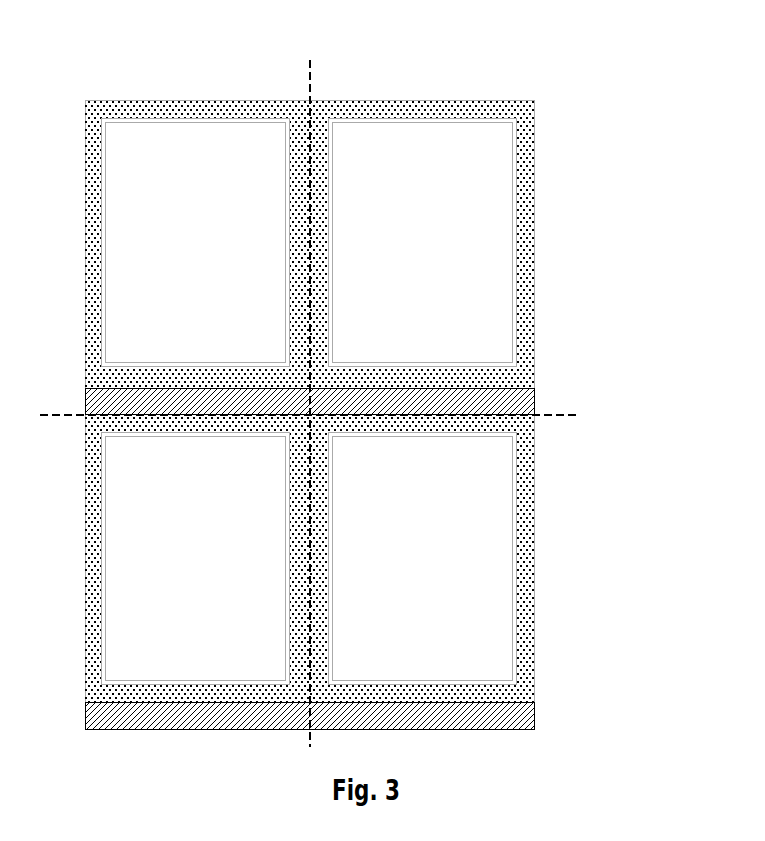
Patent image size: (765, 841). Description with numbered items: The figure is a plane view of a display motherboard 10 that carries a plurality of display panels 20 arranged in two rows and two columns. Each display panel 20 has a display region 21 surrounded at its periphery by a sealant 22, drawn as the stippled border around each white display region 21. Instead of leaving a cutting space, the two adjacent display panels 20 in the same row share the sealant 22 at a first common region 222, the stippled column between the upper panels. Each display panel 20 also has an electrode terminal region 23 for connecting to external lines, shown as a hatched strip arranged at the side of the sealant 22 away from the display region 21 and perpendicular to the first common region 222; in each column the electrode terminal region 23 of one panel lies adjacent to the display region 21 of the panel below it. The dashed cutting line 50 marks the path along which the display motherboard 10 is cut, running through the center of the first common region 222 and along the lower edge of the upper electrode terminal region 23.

The display motherboard 10 is at (437, 90).
The display panel 20 is at (374, 395).
The display region 21 is at (482, 232).
The sealant 22 is at (528, 180).
The first common region 222 is at (323, 110).
The electrode terminal region 23 is at (513, 403).
The cutting line 50 is at (313, 65).